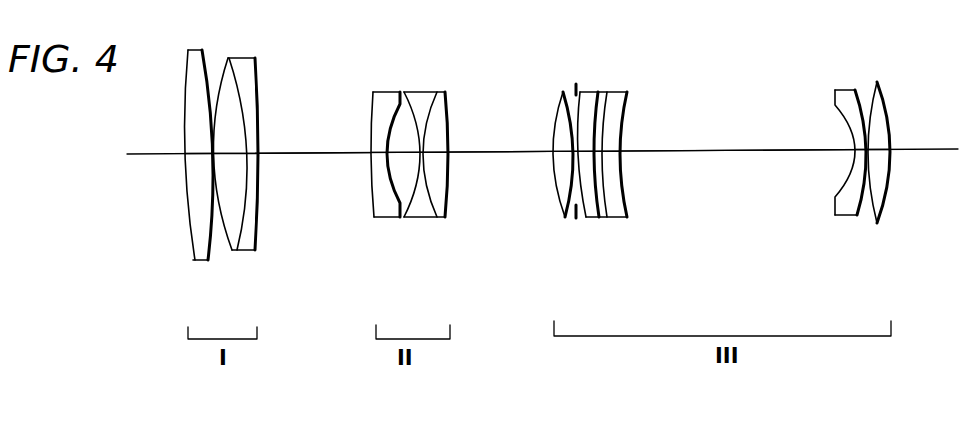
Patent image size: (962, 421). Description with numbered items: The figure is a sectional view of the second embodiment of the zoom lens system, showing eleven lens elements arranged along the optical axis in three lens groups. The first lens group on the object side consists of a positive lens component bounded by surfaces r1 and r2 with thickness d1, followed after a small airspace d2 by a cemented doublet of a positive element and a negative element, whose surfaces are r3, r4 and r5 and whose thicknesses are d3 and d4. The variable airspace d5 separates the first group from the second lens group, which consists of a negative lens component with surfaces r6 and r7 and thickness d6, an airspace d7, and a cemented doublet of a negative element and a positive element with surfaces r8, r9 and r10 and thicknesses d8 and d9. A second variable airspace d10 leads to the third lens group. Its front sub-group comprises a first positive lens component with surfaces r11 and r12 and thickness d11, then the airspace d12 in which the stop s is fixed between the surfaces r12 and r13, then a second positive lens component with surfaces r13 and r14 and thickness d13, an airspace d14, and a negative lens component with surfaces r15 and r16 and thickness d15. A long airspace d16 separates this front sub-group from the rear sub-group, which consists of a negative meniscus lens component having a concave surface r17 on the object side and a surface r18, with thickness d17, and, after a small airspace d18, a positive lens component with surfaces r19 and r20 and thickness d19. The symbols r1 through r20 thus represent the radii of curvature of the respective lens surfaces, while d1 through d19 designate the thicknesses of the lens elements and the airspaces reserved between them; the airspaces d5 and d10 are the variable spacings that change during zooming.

The thickness of first lens element d1 is at (192, 152).
The airspace between first and second lens elements d2 is at (211, 150).
The thickness of second lens element d3 is at (232, 152).
The thickness of third lens element d4 is at (250, 152).
The airspace between first and second lens groups d5 is at (309, 153).
The thickness of fourth lens element d6 is at (378, 152).
The airspace between fourth and fifth lens elements d7 is at (398, 140).
The thickness of fifth lens element d8 is at (422, 135).
The thickness of sixth lens element d9 is at (435, 150).
The airspace between second and third lens groups d10 is at (507, 152).
The thickness of seventh lens element d11 is at (562, 148).
The airspace between seventh and eighth lens elements d12 is at (569, 125).
The thickness of eighth lens element d13 is at (618, 118).
The airspace between eighth and ninth lens elements d14 is at (612, 130).
The thickness of ninth lens element d15 is at (606, 150).
The airspace between front and rear sub-groups d16 is at (718, 151).
The thickness of tenth lens element d17 is at (858, 148).
The airspace between tenth and eleventh lens elements d18 is at (869, 105).
The thickness of eleventh lens element d19 is at (882, 148).
The radius of curvature of first surface r1 is at (186, 218).
The radius of curvature of second surface r2 is at (213, 248).
The radius of curvature of third surface r3 is at (223, 240).
The radius of curvature of fourth surface r4 is at (240, 240).
The radius of curvature of fifth surface r5 is at (258, 227).
The radius of curvature of sixth surface r6 is at (372, 197).
The radius of curvature of seventh surface r7 is at (393, 205).
The radius of curvature of eighth surface r8 is at (412, 210).
The radius of curvature of ninth surface r9 is at (433, 210).
The radius of curvature of tenth surface r10 is at (450, 197).
The radius of curvature of eleventh surface r11 is at (556, 185).
The radius of curvature of twelfth surface r12 is at (569, 205).
The radius of curvature of thirteenth surface r13 is at (585, 205).
The radius of curvature of fourteenth surface r14 is at (604, 205).
The radius of curvature of fifteenth surface r15 is at (627, 200).
The radius of curvature of sixteenth surface r16 is at (625, 188).
The radius of curvature of seventeenth surface r17 is at (838, 186).
The radius of curvature of eighteenth surface r18 is at (862, 205).
The radius of curvature of nineteenth surface r19 is at (870, 207).
The radius of curvature of twentieth surface r20 is at (888, 186).
The stop s is at (576, 87).